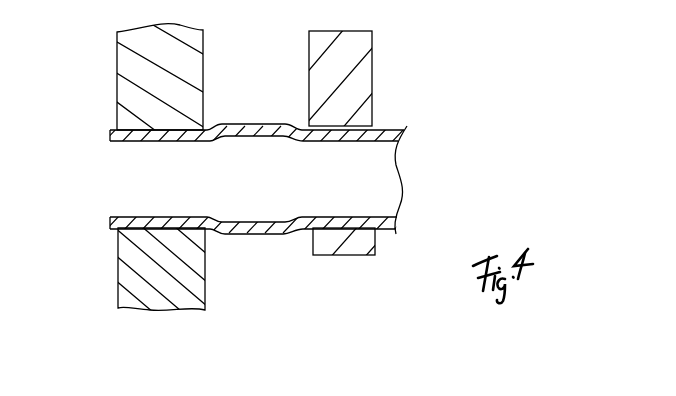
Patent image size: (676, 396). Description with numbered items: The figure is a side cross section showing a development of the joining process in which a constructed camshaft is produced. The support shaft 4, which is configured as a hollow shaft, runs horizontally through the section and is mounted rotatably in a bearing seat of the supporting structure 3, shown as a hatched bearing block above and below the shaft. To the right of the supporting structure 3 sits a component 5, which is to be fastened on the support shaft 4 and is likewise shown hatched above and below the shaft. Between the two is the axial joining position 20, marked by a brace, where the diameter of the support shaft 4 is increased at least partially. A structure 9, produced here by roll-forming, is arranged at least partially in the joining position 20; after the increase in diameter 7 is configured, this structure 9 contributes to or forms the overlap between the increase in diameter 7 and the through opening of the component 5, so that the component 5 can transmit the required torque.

The supporting structure 3 is at (143, 73).
The support shaft 4 is at (112, 238).
The component 5 is at (318, 72).
The increase in diameter 7 is at (296, 235).
The structure 9 is at (236, 236).
The joining position 20 is at (287, 119).